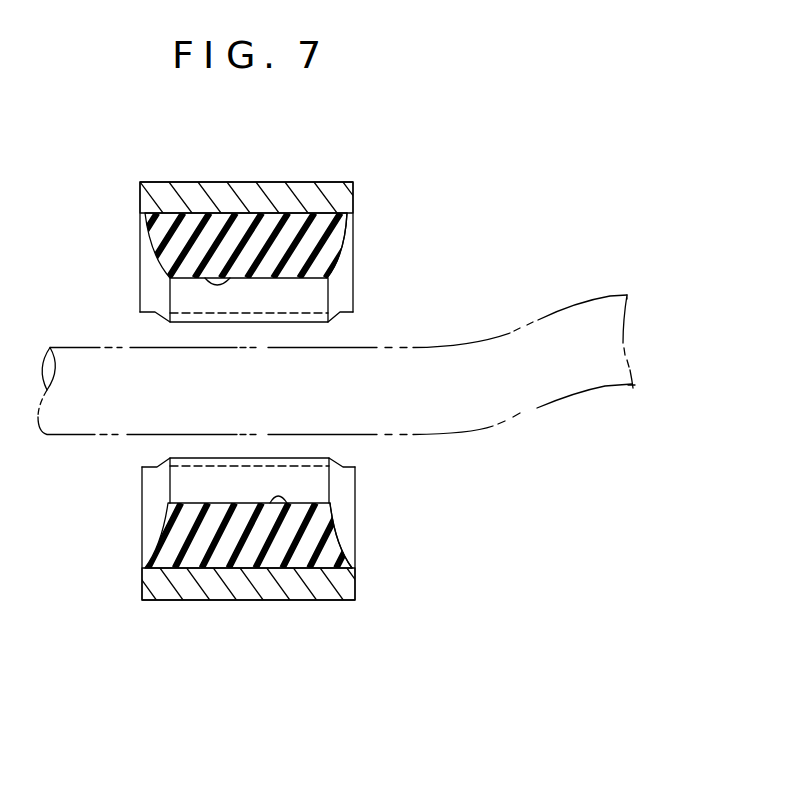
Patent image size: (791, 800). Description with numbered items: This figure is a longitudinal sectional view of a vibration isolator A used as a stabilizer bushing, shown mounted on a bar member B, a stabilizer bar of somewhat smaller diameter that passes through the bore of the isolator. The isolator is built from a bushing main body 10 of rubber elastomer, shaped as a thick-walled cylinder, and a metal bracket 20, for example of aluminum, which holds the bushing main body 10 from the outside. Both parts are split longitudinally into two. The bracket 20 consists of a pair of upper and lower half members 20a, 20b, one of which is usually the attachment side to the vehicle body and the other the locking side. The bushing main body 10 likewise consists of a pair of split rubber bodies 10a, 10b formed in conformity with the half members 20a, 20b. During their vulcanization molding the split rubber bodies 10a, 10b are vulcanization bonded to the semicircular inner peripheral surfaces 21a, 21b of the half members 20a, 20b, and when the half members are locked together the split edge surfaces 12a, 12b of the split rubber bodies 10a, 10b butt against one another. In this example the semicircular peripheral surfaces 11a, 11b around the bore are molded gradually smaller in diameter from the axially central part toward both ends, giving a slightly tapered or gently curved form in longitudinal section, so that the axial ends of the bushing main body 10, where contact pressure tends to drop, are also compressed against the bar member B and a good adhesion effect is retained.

The bushing main body 10 is at (157, 247).
The split rubber body 10a is at (290, 238).
The semicircular peripheral surface 11a is at (229, 276).
The split edge surface 12a is at (307, 322).
The half member 20a is at (347, 194).
The semicircular inner peripheral surface 21a is at (347, 230).
The bracket 20 is at (126, 595).
The split rubber body 10b is at (232, 540).
The semicircular peripheral surface 11b is at (287, 513).
The split edge surface 12b is at (322, 460).
The half member 20b is at (343, 581).
The semicircular inner peripheral surface 21b is at (347, 552).
The vibration isolator A is at (125, 197).
The bar member B is at (495, 412).